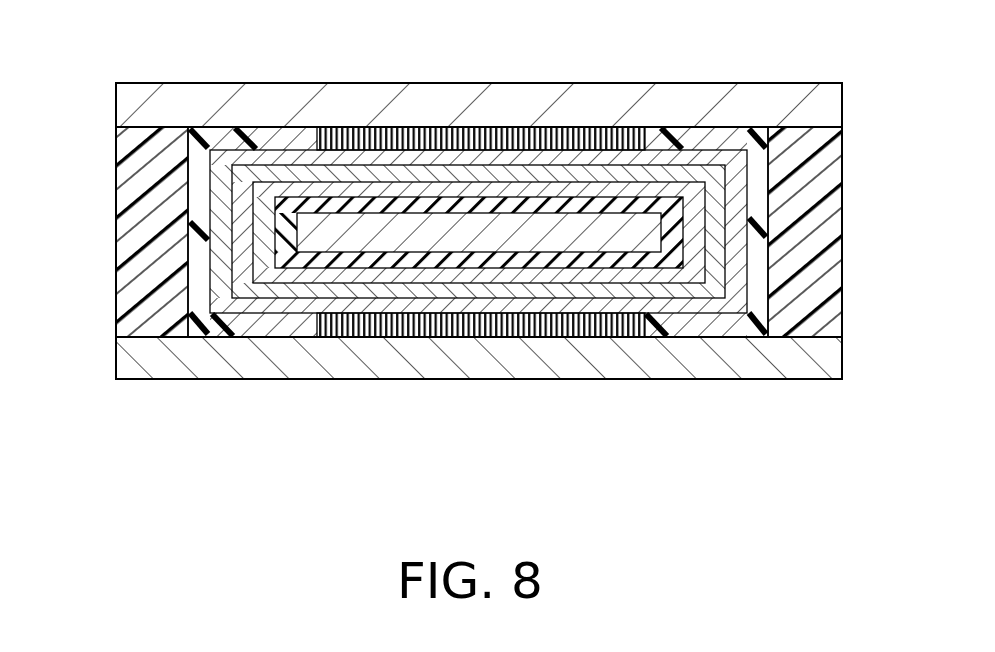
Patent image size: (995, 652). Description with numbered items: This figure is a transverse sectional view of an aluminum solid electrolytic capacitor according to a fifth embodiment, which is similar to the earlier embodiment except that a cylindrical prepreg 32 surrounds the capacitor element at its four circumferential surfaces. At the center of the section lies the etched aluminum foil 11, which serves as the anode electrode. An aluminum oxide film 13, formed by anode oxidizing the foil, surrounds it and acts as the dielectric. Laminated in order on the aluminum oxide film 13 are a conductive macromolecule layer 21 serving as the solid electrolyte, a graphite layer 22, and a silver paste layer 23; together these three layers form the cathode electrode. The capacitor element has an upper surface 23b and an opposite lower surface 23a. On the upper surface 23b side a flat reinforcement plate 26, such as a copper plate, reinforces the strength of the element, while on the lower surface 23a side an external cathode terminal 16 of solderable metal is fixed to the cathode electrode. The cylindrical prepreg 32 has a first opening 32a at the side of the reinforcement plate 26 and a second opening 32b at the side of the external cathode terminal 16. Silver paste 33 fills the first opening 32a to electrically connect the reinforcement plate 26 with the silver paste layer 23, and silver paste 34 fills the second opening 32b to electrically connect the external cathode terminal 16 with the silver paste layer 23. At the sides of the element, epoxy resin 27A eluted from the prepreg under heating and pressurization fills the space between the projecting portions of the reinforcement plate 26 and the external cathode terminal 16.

The aluminum foil 11 is at (364, 232).
The aluminum oxide film 13 is at (461, 205).
The external cathode terminal 16 is at (174, 362).
The conductive macromolecule layer 21 is at (400, 190).
The graphite layer 22 is at (333, 172).
The silver paste layer 23 is at (293, 152).
The lower surface 23a is at (543, 308).
The upper surface 23b is at (578, 158).
The reinforcement plate 26 is at (168, 110).
The eluted epoxy resin 27A is at (140, 238).
The cylindrical prepreg 32 is at (230, 137).
The first opening 32a is at (667, 137).
The second opening 32b is at (646, 326).
The silver paste 33 is at (521, 138).
The silver paste 34 is at (458, 325).